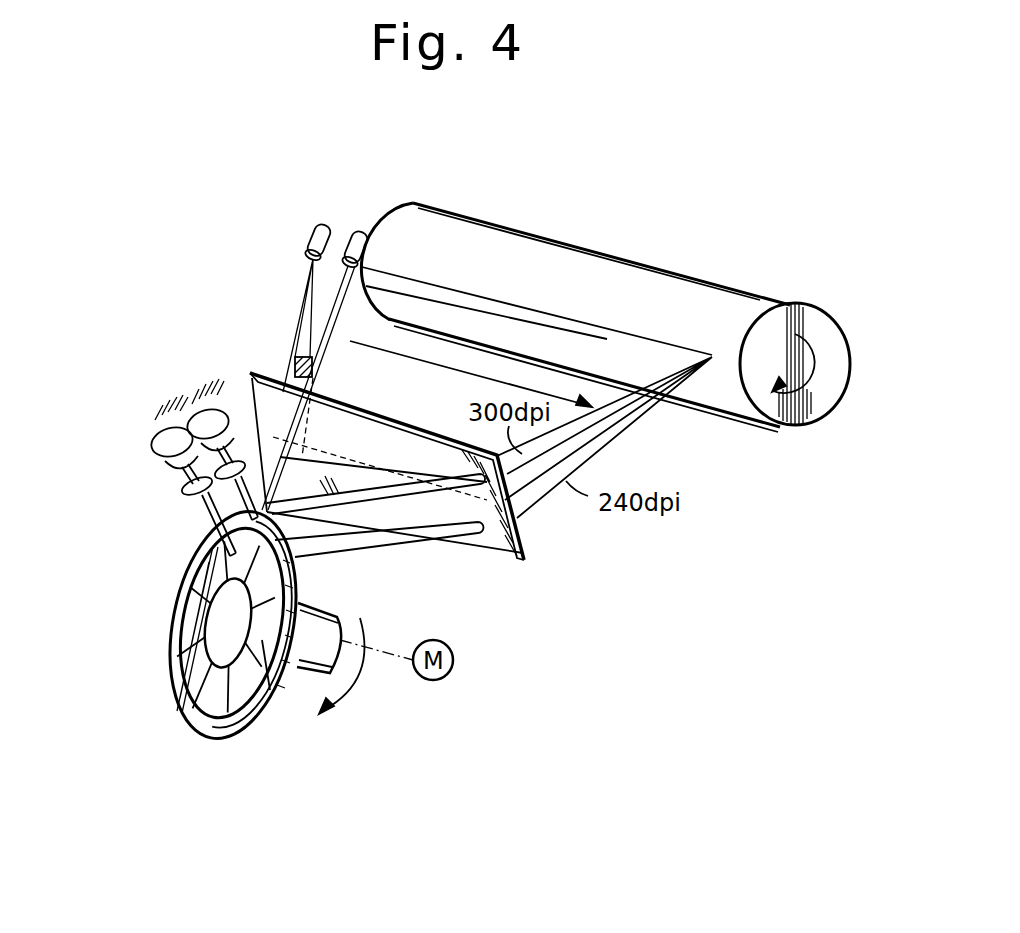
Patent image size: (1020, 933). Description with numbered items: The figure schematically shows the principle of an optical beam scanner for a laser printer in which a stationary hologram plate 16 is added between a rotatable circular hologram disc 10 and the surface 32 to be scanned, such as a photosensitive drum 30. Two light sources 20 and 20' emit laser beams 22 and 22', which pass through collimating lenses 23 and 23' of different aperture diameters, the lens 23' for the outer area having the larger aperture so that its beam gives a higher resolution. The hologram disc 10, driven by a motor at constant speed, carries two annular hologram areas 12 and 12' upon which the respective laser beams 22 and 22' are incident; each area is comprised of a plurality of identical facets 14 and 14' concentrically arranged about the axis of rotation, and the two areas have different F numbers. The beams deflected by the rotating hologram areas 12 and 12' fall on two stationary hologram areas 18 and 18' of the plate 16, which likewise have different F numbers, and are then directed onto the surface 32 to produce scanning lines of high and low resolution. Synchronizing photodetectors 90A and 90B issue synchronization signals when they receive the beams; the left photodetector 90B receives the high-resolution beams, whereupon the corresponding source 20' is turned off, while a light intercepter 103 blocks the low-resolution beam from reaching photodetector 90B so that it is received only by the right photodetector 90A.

The rotatable circular hologram disc 10 is at (168, 694).
The hologram area 12 is at (340, 682).
The hologram area 12' is at (327, 627).
The facets 14 is at (218, 656).
The facets 14' is at (226, 666).
The stationary hologram plate 16 is at (533, 557).
The stationary hologram area 18 is at (385, 540).
The stationary hologram area 18' is at (382, 437).
The light source 20 is at (141, 439).
The light source 20' is at (209, 404).
The laser beam 22 is at (189, 529).
The laser beam 22' is at (246, 469).
The lens 23 is at (171, 503).
The lens 23' is at (182, 477).
The photosensitive drum 30 is at (580, 322).
The surface to be scanned 32 is at (725, 294).
The synchronizing photodetector 90A is at (355, 238).
The synchronizing photodetector 90B is at (311, 236).
The light intercepter 103 is at (314, 367).